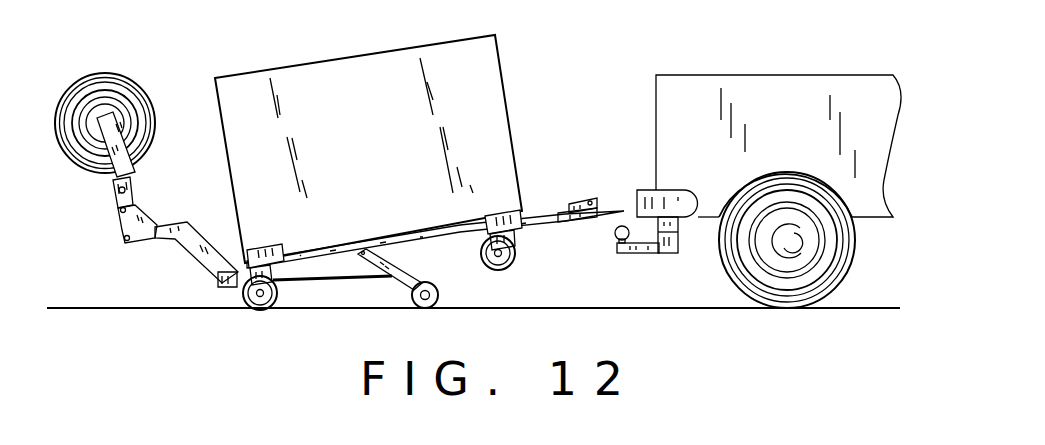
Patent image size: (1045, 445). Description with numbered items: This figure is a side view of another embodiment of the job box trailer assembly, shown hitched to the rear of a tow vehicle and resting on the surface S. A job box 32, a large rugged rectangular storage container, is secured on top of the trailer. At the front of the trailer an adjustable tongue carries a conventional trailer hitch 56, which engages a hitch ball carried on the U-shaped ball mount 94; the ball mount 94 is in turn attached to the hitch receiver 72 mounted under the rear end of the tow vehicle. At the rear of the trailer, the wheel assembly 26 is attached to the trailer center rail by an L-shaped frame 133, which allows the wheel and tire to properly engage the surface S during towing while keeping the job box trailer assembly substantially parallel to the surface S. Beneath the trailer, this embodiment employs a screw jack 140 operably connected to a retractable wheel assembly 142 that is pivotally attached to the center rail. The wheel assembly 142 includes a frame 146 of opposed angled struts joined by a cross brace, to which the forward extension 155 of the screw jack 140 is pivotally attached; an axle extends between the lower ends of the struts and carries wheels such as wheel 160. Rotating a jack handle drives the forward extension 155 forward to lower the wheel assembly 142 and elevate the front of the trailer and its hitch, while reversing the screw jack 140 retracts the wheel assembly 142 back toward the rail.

The wheel assembly 26 is at (92, 64).
The L-shaped frame 133 is at (177, 214).
The job box 32 is at (368, 149).
The trailer hitch 56 is at (605, 207).
The retractable wheel assembly 142 is at (468, 288).
The screw jack 140 is at (298, 298).
The forward extension 155 is at (344, 282).
The frame 146 is at (400, 266).
The wheel 160 is at (427, 303).
The U-shaped ball mount 94 is at (632, 252).
The hitch receiver 72 is at (681, 232).
The surface S is at (735, 312).